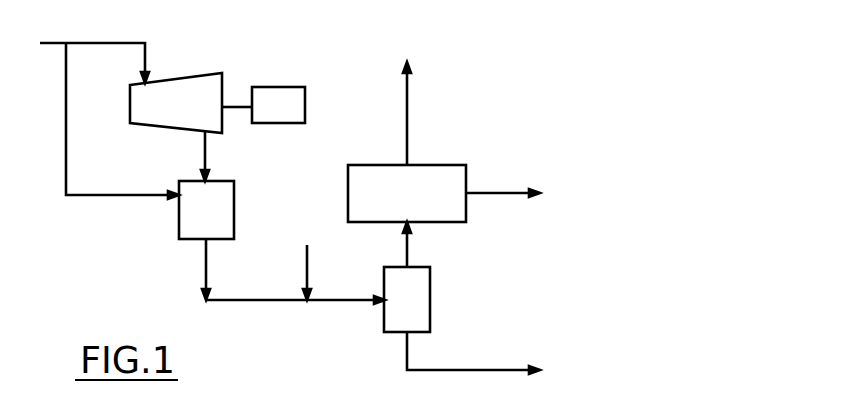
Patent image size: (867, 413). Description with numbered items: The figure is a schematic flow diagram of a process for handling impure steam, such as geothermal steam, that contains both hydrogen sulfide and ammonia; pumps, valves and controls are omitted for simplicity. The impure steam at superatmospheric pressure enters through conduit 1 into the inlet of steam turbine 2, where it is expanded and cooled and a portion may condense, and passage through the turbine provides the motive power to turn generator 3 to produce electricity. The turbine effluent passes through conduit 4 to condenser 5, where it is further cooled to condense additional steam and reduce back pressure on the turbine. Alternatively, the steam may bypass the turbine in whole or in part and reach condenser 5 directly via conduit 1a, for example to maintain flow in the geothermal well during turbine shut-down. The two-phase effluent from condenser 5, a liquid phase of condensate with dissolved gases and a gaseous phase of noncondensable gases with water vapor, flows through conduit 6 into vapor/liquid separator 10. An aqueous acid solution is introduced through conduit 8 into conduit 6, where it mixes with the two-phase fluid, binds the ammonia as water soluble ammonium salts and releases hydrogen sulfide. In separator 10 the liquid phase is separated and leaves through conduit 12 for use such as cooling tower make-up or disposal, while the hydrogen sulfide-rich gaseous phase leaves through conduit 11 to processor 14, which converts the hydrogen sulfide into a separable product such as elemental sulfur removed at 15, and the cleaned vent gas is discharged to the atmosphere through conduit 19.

The conduit 1 is at (93, 42).
The conduit 1a is at (67, 153).
The steam turbine 2 is at (170, 80).
The generator 3 is at (270, 86).
The conduit 4 is at (208, 160).
The condenser 5 is at (235, 207).
The conduit 6 is at (327, 296).
The conduit 8 is at (307, 265).
The vapor/liquid separator 10 is at (430, 297).
The conduit 11 is at (410, 250).
The conduit 12 is at (433, 367).
The processor 14 is at (435, 165).
The reaction product removal 15 is at (483, 193).
The conduit 19 is at (407, 112).